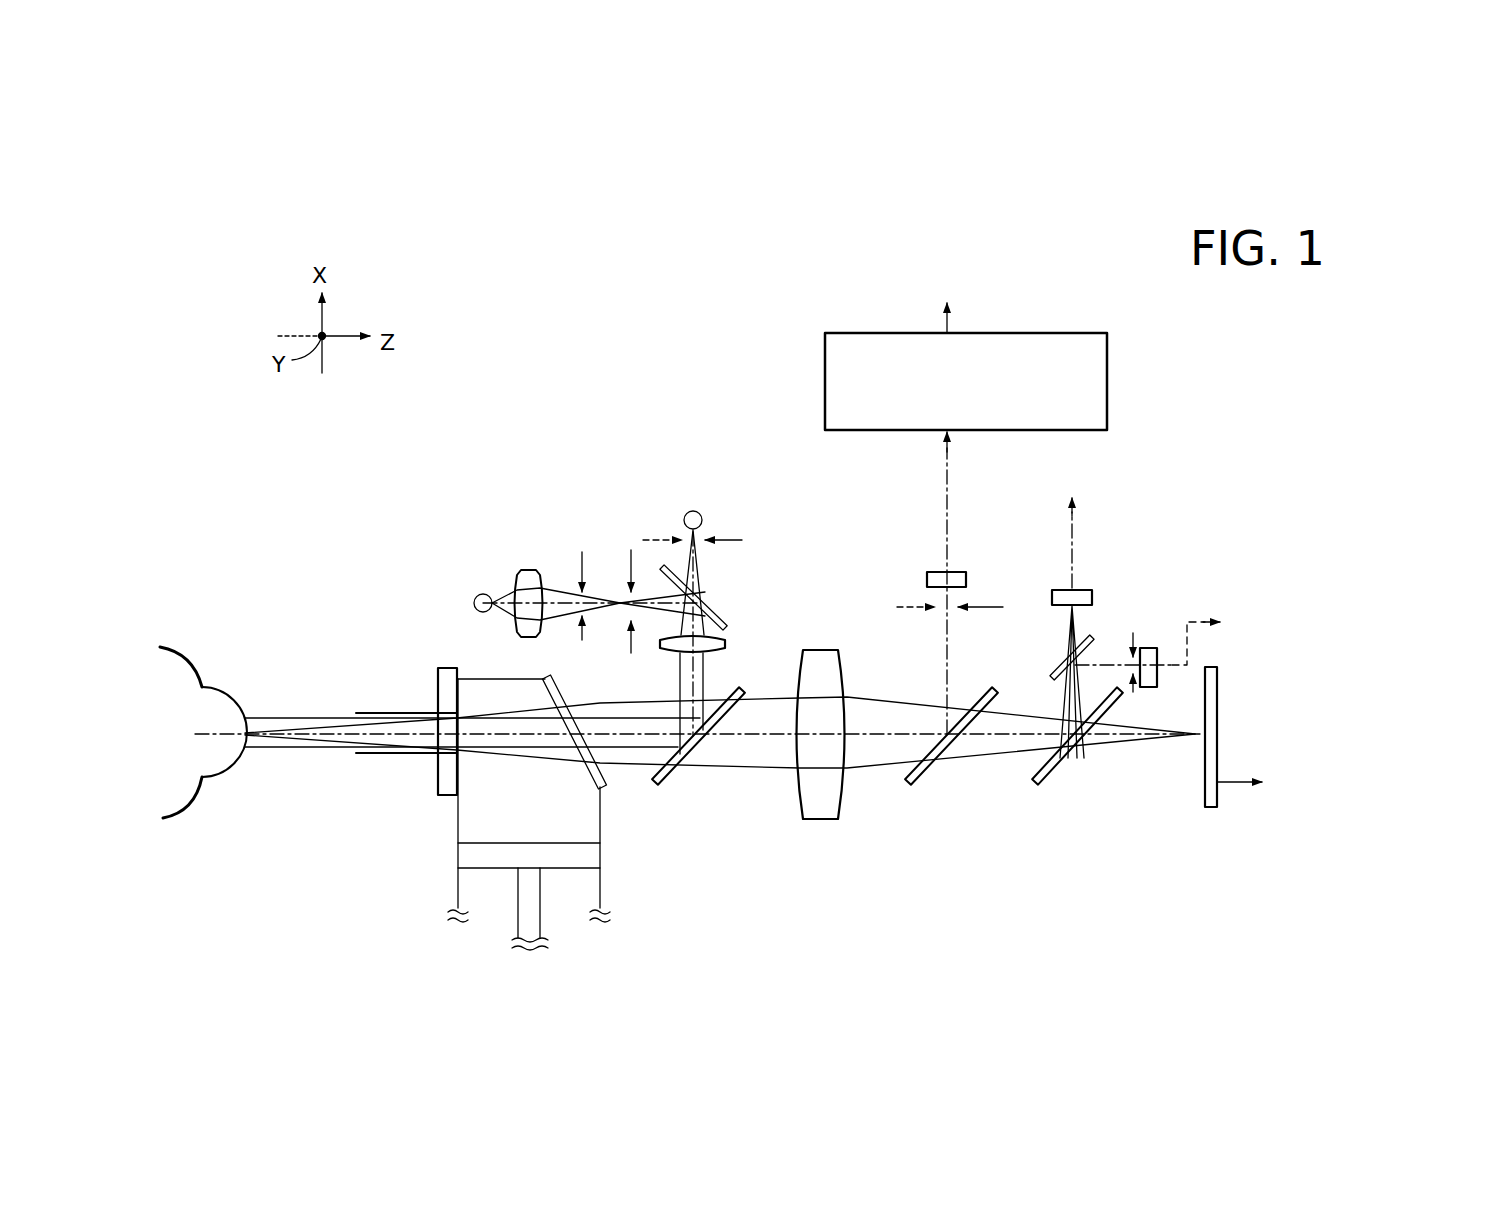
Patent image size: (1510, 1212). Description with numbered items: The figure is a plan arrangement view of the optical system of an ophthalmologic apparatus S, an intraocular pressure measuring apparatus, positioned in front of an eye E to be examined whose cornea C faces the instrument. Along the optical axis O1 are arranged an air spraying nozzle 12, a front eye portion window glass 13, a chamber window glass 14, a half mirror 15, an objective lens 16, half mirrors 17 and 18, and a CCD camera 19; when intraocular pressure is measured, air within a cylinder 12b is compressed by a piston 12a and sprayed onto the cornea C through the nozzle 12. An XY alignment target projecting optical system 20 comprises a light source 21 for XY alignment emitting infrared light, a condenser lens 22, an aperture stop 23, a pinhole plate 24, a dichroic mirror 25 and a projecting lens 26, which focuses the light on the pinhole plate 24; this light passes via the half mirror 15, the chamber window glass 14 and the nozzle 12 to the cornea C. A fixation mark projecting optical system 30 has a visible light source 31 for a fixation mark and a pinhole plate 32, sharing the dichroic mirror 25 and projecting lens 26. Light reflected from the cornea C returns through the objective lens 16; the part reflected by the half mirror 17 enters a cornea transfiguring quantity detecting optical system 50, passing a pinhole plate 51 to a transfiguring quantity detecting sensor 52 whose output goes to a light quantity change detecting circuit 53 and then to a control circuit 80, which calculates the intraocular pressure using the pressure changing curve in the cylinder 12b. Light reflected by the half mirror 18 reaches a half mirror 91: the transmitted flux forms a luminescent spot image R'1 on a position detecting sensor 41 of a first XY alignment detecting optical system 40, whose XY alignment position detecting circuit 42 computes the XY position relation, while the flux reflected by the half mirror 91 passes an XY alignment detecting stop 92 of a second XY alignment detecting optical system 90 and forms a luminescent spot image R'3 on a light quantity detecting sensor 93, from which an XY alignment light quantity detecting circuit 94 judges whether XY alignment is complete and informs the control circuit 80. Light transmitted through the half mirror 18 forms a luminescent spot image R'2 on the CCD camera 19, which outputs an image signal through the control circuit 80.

The eye to be examined E is at (190, 638).
The cornea C is at (218, 693).
The air spraying nozzle 12 is at (370, 712).
The piston 12a is at (580, 856).
The cylinder 12b is at (466, 826).
The front eye portion window glass 13 is at (445, 667).
The chamber window glass 14 is at (557, 690).
The half mirror 15 is at (673, 778).
The objective lens 16 is at (818, 650).
The half mirror 17 is at (925, 778).
The half mirror 18 is at (1050, 773).
The CCD camera 19 is at (1201, 780).
The optical axis O1 is at (767, 736).
The XY alignment target projecting optical system 20 is at (619, 535).
The light source for XY alignment 21 is at (477, 598).
The condenser lens 22 is at (525, 570).
The aperture stop 23 is at (582, 550).
The pinhole plate 24 is at (631, 550).
The dichroic mirror 25 is at (713, 612).
The projecting lens 26 is at (727, 647).
The fixation mark projecting optical system 30 is at (723, 521).
The light source for fixation mark 31 is at (693, 511).
The pinhole plate 32 is at (732, 539).
The ophthalmologic apparatus S is at (652, 417).
The first XY alignment detecting optical system 40 is at (1093, 628).
The position detecting sensor 41 is at (1087, 596).
The XY alignment position detecting circuit 42 is at (1151, 466).
The cornea transfiguring quantity detecting optical system 50 is at (948, 583).
The pinhole plate 51 is at (970, 605).
The transfiguring quantity detecting sensor 52 is at (955, 570).
The light quantity change detecting circuit 53 is at (1060, 333).
The control circuit 80 is at (1143, 527).
The second XY alignment detecting optical system 90 is at (1101, 609).
The half mirror 91 is at (1060, 662).
The XY alignment detecting stop 92 is at (1133, 647).
The light quantity detecting sensor 93 is at (1150, 647).
The XY alignment light quantity detecting circuit 94 is at (1358, 657).
The luminescent spot image R'1 is at (1036, 627).
The luminescent spot image R'2 is at (1166, 762).
The luminescent spot image R'3 is at (1163, 710).